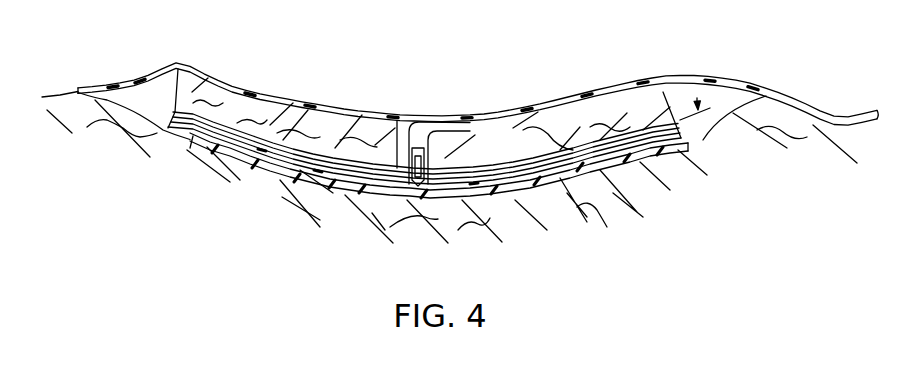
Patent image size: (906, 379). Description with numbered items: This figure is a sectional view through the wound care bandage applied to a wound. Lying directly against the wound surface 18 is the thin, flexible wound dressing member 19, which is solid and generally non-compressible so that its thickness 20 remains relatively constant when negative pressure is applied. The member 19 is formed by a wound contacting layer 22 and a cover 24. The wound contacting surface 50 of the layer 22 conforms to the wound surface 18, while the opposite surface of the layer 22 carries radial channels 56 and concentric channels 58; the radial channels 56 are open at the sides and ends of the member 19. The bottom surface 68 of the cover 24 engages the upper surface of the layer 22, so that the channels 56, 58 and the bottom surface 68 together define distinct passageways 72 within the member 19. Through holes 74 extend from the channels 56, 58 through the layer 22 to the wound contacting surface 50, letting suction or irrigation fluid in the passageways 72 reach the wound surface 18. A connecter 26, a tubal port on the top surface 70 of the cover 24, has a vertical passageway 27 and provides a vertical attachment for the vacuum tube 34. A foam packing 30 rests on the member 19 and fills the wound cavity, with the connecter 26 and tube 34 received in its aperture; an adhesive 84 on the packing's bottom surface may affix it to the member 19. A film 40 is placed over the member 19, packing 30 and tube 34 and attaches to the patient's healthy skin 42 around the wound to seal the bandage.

The wound surface 18 is at (128, 103).
The wound dressing member 19 is at (150, 96).
The thickness 20 is at (710, 141).
The wound contacting layer 22 is at (276, 218).
The cover 24 is at (598, 194).
The connecter 26 is at (447, 163).
The vertical passageway 27 is at (413, 143).
The foam packing 30 is at (638, 118).
The vacuum tube 34 is at (838, 116).
The film 40 is at (746, 83).
The healthy skin 42 is at (72, 95).
The wound contacting surface 50 is at (250, 178).
The channels 56 is at (243, 128).
The concentric channels 58 is at (197, 147).
The bottom surface 68 is at (573, 185).
The top surface 70 is at (323, 113).
The passageways 72 is at (165, 111).
The through holes 74 is at (198, 170).
The adhesive 84 is at (195, 103).